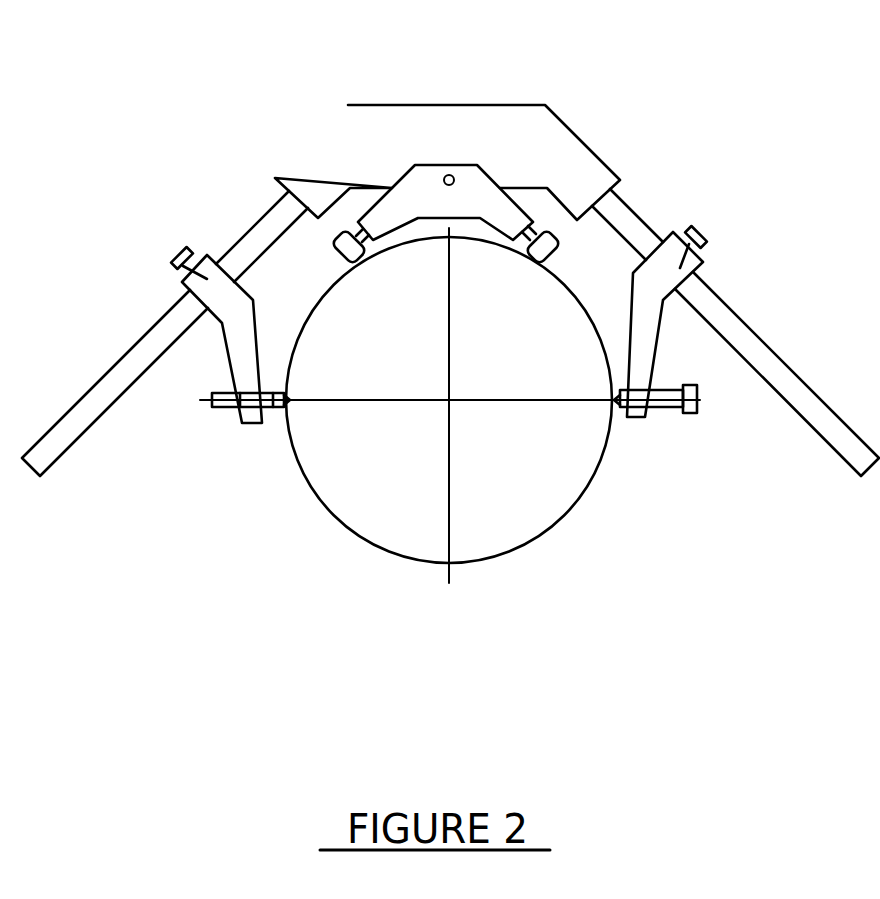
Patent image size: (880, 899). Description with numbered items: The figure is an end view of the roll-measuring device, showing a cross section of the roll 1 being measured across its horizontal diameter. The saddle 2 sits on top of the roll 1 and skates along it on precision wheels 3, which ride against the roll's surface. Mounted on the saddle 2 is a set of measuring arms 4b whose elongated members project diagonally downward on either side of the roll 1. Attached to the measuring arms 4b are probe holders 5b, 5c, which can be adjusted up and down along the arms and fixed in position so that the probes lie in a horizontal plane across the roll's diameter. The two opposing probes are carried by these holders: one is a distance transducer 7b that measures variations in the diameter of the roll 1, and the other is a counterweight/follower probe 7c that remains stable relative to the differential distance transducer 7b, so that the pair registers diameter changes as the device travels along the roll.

The roll 1 is at (533, 490).
The saddle 2 is at (448, 198).
The precision wheels 3 is at (348, 268).
The measuring arm 4b is at (567, 163).
The probe holder 5b is at (172, 262).
The probe holder 5c is at (689, 240).
The distance transducer 7b is at (277, 410).
The counterweight/follower probe 7c is at (615, 402).